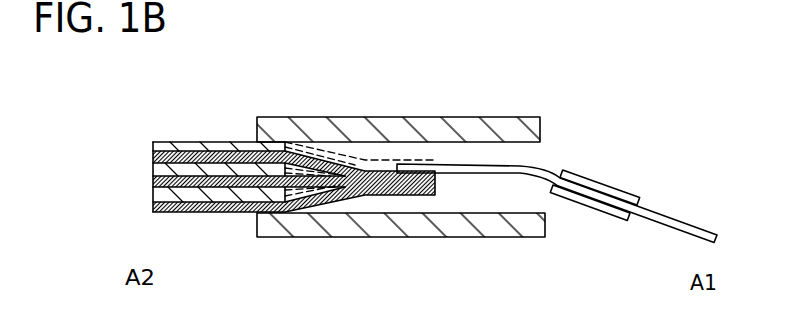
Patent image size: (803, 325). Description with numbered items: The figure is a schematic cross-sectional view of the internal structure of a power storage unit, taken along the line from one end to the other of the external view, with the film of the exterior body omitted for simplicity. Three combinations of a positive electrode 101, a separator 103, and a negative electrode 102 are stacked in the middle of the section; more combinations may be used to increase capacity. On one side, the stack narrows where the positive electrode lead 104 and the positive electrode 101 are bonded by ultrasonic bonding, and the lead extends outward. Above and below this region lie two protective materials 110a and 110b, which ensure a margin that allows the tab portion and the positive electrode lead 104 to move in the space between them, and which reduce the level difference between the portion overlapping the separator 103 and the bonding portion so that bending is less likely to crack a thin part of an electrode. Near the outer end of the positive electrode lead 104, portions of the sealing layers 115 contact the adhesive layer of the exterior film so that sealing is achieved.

The positive electrode 101 is at (269, 192).
The negative electrode 102 is at (197, 142).
The separator 103 is at (153, 142).
The positive electrode lead 104 is at (535, 171).
The protective material 110a is at (398, 122).
The protective material 110b is at (357, 225).
The sealing layer 115 is at (608, 190).